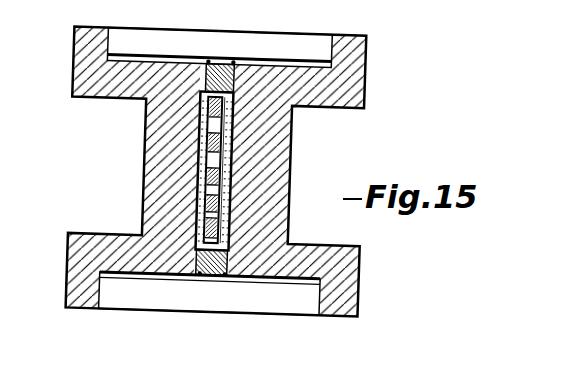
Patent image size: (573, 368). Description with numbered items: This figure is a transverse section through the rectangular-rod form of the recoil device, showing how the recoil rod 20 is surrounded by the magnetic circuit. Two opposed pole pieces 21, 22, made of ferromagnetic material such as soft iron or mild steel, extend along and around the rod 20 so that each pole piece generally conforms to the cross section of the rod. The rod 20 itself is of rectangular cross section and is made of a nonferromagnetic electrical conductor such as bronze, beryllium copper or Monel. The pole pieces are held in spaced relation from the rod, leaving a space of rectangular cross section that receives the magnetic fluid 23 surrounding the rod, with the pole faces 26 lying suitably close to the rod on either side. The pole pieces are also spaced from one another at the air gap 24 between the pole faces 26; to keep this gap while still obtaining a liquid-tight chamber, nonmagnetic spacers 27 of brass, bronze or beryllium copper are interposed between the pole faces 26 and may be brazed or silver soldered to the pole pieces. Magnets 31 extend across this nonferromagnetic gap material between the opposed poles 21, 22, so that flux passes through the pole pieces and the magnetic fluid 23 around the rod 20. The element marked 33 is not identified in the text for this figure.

The recoil rod 20 is at (200, 188).
The pole piece 21 is at (72, 67).
The pole piece 22 is at (366, 86).
The magnetic fluid 23 is at (225, 198).
The air gap 24 is at (215, 88).
The pole faces 26 is at (198, 68).
The nonmagnetic spacers 27 is at (210, 272).
The magnets 31 is at (250, 42).
The liner shell 33 is at (228, 157).